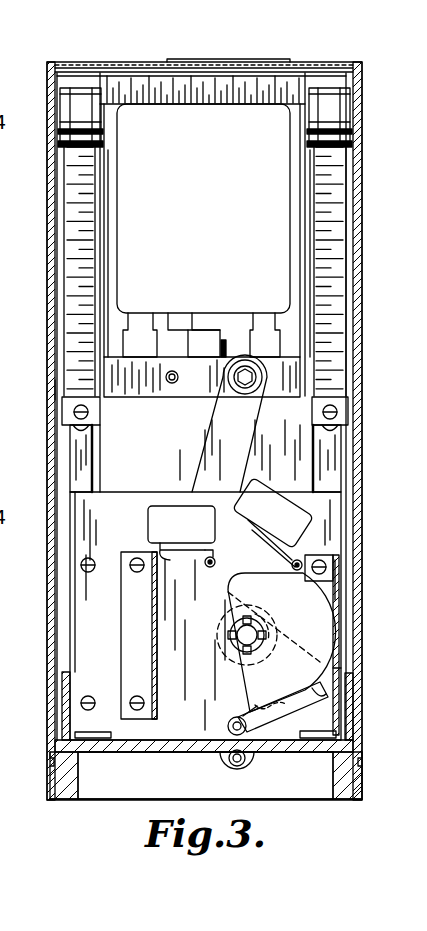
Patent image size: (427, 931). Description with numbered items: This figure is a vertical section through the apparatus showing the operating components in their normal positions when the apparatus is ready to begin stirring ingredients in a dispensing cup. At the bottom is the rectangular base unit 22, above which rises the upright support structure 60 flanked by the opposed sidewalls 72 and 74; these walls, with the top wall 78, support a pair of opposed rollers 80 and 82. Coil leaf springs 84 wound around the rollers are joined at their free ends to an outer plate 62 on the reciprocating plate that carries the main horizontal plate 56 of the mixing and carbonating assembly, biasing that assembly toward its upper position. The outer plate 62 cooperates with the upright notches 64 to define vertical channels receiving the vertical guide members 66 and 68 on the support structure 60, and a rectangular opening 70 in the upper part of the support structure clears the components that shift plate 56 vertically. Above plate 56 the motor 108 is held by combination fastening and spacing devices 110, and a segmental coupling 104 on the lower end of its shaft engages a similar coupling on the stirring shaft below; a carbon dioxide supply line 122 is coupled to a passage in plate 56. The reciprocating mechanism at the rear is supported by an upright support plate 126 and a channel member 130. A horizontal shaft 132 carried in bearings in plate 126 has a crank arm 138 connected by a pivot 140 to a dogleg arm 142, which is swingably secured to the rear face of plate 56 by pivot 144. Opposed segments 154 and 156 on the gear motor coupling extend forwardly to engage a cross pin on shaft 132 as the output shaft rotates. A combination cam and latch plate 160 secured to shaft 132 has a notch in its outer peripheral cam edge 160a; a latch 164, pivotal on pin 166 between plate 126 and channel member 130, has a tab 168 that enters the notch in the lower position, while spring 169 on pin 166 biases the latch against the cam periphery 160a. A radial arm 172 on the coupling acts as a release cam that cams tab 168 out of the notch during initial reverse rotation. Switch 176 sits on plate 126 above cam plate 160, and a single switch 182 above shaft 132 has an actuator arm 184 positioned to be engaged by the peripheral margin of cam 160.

The base unit 22 is at (338, 812).
The main horizontal plate 56 is at (140, 398).
The upright support structure 60 is at (148, 88).
The outer plate 62 is at (100, 458).
The upright notches 64 is at (107, 271).
The vertical guide member 66 is at (333, 475).
The vertical guide member 68 is at (75, 443).
The rectangular opening 70 is at (212, 104).
The sidewall 72 is at (47, 389).
The sidewall 74 is at (378, 442).
The top wall 78 is at (272, 62).
The roller 80 is at (106, 135).
The roller 82 is at (306, 140).
The coil leaf springs 84 is at (75, 246).
The segmental coupling 104 is at (226, 343).
The motor 108 is at (203, 208).
The combination fastening and spacing devices 110 is at (134, 318).
The carbon dioxide supply line 122 is at (179, 375).
The upright support plate 126 is at (135, 495).
The channel member 130 is at (340, 583).
The shaft 132 is at (230, 634).
The crank arm 138 is at (231, 766).
The pivot 140 is at (255, 768).
The dogleg arm 142 is at (250, 445).
The pivot 144 is at (258, 379).
The segment 154 is at (230, 645).
The segment 156 is at (258, 626).
The combination cam and latch plate 160 is at (237, 590).
The outer peripheral cam edge 160a is at (340, 668).
The latch 164 is at (300, 704).
The pin 166 is at (228, 727).
The tab 168 is at (262, 697).
The spring 169 is at (243, 717).
The arm 172 is at (276, 627).
The switch 176 is at (290, 515).
The single switch 182 is at (158, 522).
The actuator arm 184 is at (205, 562).